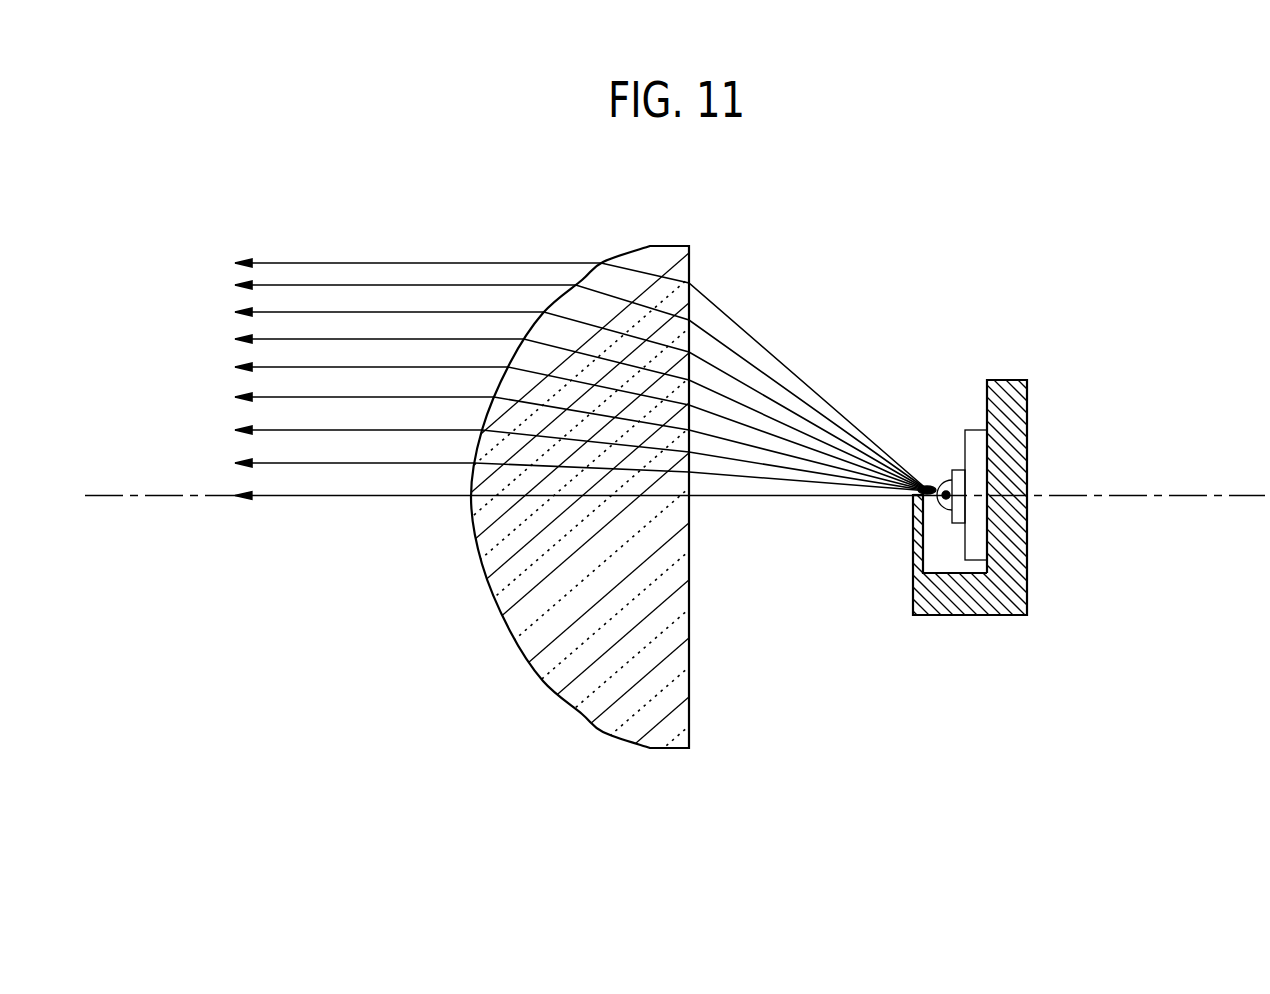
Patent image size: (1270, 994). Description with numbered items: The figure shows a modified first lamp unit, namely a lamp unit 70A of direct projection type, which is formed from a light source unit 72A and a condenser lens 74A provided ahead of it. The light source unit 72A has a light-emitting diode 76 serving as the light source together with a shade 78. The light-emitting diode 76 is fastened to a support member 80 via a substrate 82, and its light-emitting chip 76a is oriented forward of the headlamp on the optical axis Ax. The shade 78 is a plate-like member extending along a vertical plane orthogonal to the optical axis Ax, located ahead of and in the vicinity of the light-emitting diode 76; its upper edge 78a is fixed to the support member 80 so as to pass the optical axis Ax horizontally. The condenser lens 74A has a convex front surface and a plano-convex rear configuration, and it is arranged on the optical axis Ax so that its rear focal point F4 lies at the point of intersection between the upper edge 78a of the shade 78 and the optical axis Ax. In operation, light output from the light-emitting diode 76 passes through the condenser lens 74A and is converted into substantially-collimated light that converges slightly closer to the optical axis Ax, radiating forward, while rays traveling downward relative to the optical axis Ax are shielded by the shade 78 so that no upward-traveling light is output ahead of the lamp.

The lamp unit 70A is at (675, 563).
The light source unit 72A is at (966, 487).
The condenser lens 74A is at (603, 267).
The light-emitting diode 76 is at (944, 527).
The light-emitting chip 76a is at (945, 484).
The shade 78 is at (912, 542).
The upper edge 78a is at (918, 492).
The support member 80 is at (1027, 549).
The substrate 82 is at (993, 458).
The rear focal point F4 is at (896, 492).
The optical axis Ax is at (157, 496).